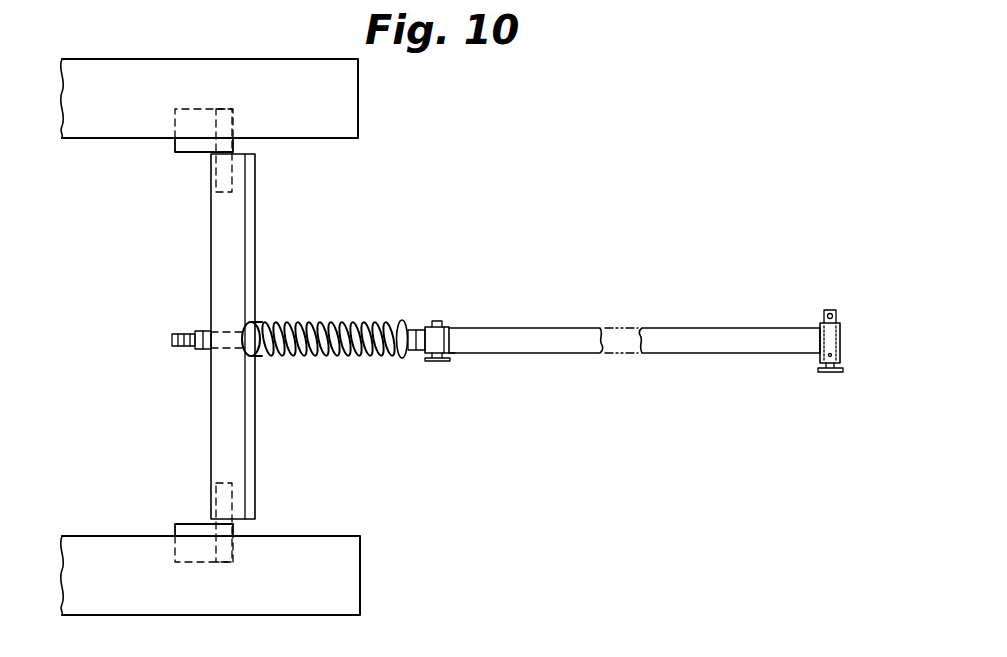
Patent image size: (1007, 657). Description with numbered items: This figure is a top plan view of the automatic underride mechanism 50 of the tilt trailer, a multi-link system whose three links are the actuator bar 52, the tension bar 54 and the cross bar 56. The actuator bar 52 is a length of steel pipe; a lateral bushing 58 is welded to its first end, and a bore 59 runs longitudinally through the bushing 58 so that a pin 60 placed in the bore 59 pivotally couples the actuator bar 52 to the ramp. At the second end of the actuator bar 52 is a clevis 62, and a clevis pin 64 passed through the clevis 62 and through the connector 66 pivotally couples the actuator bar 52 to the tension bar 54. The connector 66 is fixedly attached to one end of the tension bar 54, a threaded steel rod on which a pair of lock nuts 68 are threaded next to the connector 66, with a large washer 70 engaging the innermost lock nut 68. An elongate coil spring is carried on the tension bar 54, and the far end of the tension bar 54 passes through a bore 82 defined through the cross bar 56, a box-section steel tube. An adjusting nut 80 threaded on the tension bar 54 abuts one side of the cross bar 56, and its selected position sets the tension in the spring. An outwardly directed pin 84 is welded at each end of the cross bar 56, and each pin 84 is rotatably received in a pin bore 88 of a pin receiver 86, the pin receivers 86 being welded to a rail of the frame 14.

The frame 14 is at (123, 537).
The automatic underride mechanism 50 is at (512, 258).
The actuator bar 52 is at (687, 353).
The tension bar 54 is at (320, 358).
The cross bar 56 is at (211, 243).
The lateral bushing 58 is at (842, 327).
The bore 59 is at (841, 356).
The pin 60 is at (823, 373).
The clevis 62 is at (453, 345).
The clevis pin 64 is at (437, 358).
The connector 66 is at (445, 340).
The lock nuts 68 is at (412, 335).
The washer 70 is at (408, 360).
The adjusting nut 80 is at (207, 330).
The bore 82 is at (228, 332).
The pin 84 is at (216, 173).
The pin receiver 86 is at (185, 108).
The pin bore 88 is at (233, 120).